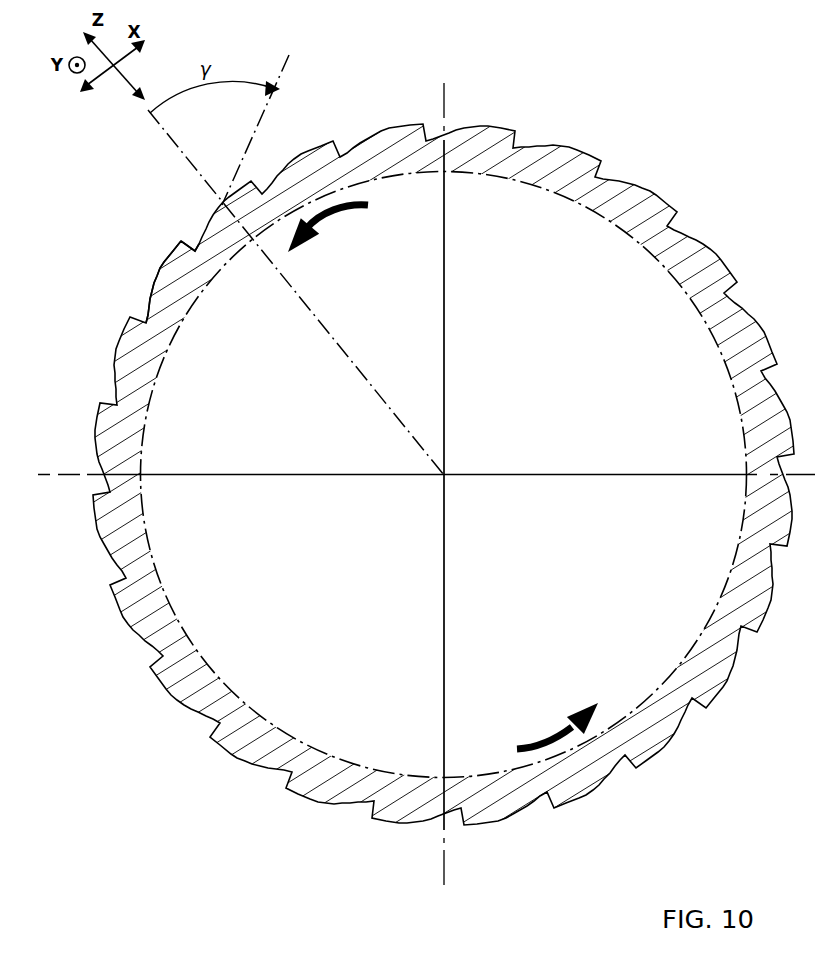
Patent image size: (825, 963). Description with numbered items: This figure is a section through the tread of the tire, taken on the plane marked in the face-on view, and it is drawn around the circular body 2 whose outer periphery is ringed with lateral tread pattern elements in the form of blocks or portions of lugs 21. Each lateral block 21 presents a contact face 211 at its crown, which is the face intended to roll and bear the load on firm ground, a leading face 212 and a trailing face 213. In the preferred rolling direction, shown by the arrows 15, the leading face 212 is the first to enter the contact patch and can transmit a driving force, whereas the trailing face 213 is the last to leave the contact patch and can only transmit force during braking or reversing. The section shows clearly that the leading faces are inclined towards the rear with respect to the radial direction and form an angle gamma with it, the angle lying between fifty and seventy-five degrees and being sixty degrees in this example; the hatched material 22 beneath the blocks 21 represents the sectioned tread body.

The toothed wheel 2 is at (425, 437).
The lateral block 21 is at (657, 212).
The contact face 211 is at (170, 253).
The leading face 212 is at (157, 295).
The trailing face 213 is at (194, 243).
The wheel body 22 is at (147, 317).
The arrows 15 is at (323, 222).